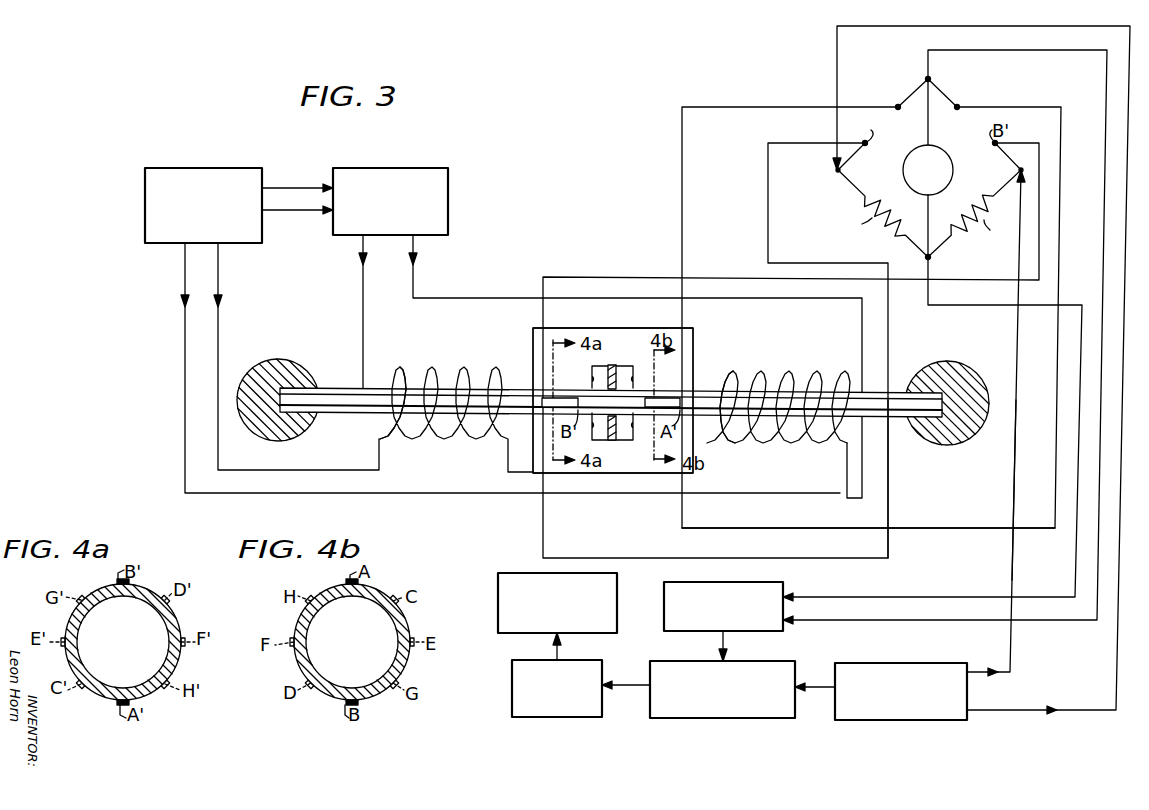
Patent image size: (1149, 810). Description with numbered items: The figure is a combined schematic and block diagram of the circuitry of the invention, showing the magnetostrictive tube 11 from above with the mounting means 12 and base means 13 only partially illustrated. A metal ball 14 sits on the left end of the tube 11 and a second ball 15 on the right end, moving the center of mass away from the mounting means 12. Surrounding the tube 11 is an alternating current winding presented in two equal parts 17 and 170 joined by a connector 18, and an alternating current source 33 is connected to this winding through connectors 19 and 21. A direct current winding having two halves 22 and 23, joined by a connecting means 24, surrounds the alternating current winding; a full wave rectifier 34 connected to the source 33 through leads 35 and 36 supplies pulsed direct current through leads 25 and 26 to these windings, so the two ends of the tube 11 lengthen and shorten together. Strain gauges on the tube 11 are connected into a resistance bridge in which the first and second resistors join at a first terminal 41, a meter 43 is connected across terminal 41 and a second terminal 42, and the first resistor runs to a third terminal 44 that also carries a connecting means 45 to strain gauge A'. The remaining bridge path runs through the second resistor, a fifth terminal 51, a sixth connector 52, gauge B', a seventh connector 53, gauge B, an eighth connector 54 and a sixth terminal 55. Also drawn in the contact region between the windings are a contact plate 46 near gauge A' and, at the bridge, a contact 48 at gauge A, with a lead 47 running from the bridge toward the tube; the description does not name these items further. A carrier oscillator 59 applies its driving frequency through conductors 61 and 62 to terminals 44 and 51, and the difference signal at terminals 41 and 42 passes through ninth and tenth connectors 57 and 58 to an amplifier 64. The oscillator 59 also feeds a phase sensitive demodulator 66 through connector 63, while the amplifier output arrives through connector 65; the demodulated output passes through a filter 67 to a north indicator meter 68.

The magnetostrictive tube 11 is at (350, 386).
The mounting means 12 is at (618, 441).
The base means 13 is at (607, 366).
The metal ball 14 is at (276, 358).
The ball 15 is at (958, 368).
The alternating current winding 17 is at (391, 385).
The connector 18 is at (615, 474).
The connector 19 is at (218, 268).
The connector 21 is at (185, 263).
The direct current winding half 22 is at (448, 442).
The direct current winding half 23 is at (798, 445).
The connecting means 24 is at (604, 328).
The lead 25 is at (363, 288).
The lead 26 is at (417, 290).
The alternating current source 33 is at (237, 168).
The full wave rectifier 34 is at (395, 168).
The lead 35 is at (297, 187).
The lead 36 is at (283, 211).
The first terminal 41 is at (932, 258).
The second terminal 42 is at (932, 80).
The meter 43 is at (953, 167).
The third terminal 44 is at (842, 170).
The connecting means 45 is at (889, 498).
The contact plate 46 is at (645, 402).
The lead 47 is at (682, 206).
The contact A 48 is at (898, 107).
The fifth terminal 51 is at (1018, 170).
The sixth connector 52 is at (588, 278).
The seventh connector 53 is at (578, 398).
The eighth connector 54 is at (775, 529).
The sixth terminal 55 is at (957, 107).
The ninth connector 57 is at (1076, 572).
The tenth connector 58 is at (1105, 246).
The carrier oscillator 59 is at (968, 690).
The conductor 61 is at (1015, 482).
The conductor 62 is at (1111, 26).
The connector 63 is at (822, 688).
The amplifier 64 is at (705, 582).
The connector 65 is at (728, 645).
The phase sensitive demodulator 66 is at (701, 718).
The filter 67 is at (565, 717).
The north indicator meter 68 is at (617, 608).
The alternating current winding half 170 is at (744, 388).